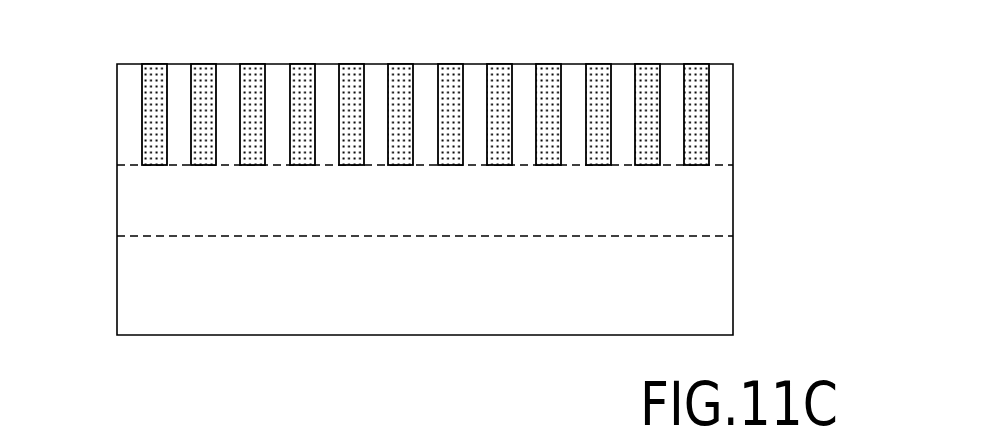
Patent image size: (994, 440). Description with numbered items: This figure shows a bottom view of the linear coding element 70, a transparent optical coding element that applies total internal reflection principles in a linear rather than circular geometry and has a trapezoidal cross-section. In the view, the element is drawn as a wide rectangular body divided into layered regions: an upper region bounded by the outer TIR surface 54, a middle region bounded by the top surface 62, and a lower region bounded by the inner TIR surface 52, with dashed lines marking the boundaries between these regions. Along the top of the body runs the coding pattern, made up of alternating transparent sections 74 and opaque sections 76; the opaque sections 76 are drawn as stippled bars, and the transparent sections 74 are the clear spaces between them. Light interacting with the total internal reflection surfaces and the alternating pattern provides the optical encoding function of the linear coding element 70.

The inner TIR surface 52 is at (117, 281).
The outer TIR surface 54 is at (117, 116).
The top surface 62 is at (117, 195).
The linear coding element 70 is at (797, 98).
The transparent sections 74 is at (377, 75).
The opaque sections 76 is at (552, 75).